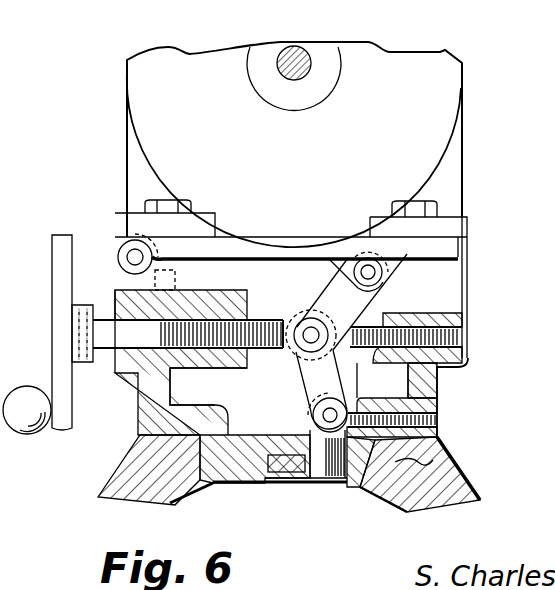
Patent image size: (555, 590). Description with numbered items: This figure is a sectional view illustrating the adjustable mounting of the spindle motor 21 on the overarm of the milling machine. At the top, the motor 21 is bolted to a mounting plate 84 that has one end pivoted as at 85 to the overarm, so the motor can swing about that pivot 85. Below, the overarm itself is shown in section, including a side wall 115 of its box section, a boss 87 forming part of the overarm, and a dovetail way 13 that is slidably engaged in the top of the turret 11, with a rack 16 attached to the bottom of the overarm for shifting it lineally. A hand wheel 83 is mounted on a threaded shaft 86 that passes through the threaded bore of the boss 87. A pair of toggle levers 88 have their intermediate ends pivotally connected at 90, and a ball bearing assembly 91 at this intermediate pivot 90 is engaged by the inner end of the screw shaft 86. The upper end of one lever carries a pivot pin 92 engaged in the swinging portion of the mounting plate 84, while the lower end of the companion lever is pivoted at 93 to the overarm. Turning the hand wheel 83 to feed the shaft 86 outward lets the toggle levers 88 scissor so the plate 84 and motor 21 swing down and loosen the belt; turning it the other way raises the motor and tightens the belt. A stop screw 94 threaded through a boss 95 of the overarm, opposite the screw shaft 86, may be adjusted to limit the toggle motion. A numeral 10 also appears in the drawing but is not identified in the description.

The housing 10 is at (454, 379).
The turret 11 is at (498, 500).
The dovetail way 13 is at (445, 452).
The rack 16 is at (290, 480).
The motor 21 is at (442, 105).
The hand wheel 83 is at (60, 340).
The mounting plate 84 is at (445, 247).
The pivot 85 is at (134, 257).
The threaded shaft 86 is at (255, 348).
The boss 87 is at (200, 355).
The toggle levers 88 is at (353, 300).
The intermediate pivot 90 is at (325, 340).
The ball bearing assembly 91 is at (300, 305).
The pivot pin 92 is at (382, 276).
The pivot 93 is at (320, 415).
The stop screw 94 is at (462, 338).
The boss 95 is at (378, 365).
The side walls 115 is at (150, 390).